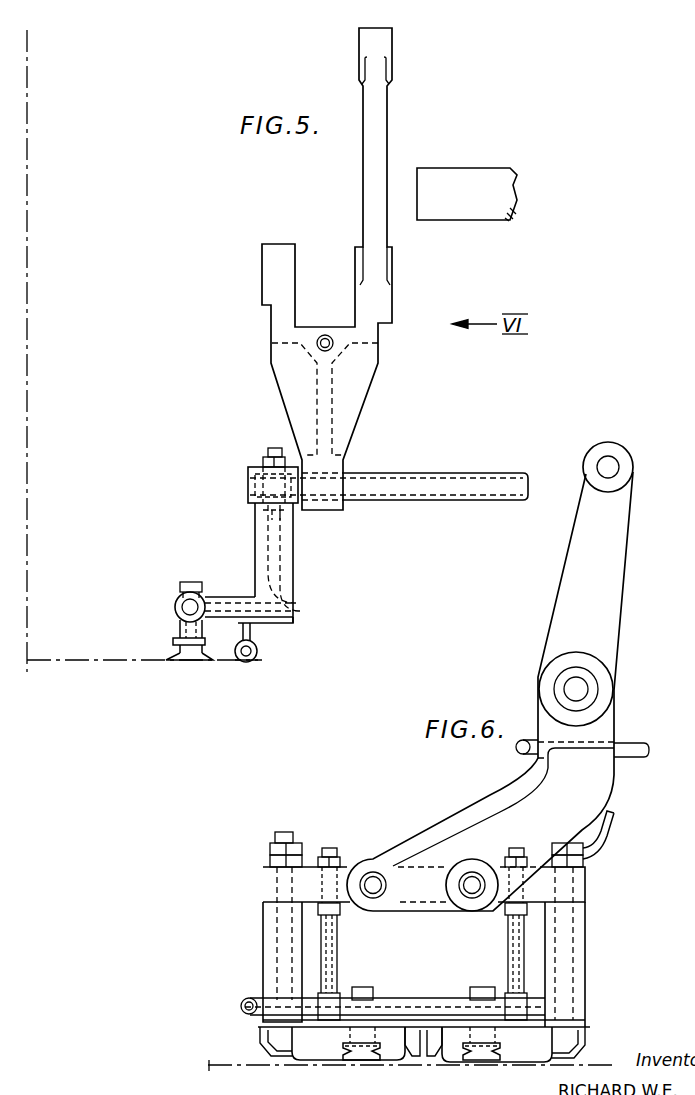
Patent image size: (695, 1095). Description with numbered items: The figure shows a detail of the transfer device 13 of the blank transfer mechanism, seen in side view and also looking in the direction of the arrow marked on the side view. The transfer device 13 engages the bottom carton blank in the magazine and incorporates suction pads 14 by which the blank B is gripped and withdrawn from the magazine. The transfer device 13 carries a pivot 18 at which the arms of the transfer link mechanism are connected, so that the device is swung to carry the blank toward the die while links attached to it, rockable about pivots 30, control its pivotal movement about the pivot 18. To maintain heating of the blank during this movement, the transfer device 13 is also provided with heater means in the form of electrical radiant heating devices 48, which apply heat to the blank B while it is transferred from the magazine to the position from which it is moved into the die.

In FIG. 5, the transfer device 13 is at (368, 420).
In FIG. 6, the transfer device 13 is at (492, 792).
In FIG. 5, the suction pads 14 is at (177, 658).
In FIG. 6, the suction pads 14 is at (373, 1061).
In FIG. 6, the pivot 18 is at (586, 688).
In FIG. 5, the pivots 30 is at (456, 213).
In FIG. 5, the electrical radiant heating devices 48 is at (258, 652).
In FIG. 6, the electrical radiant heating devices 48 is at (318, 1047).
In FIG. 5, the blank B is at (84, 662).
In FIG. 6, the blank B is at (240, 1071).